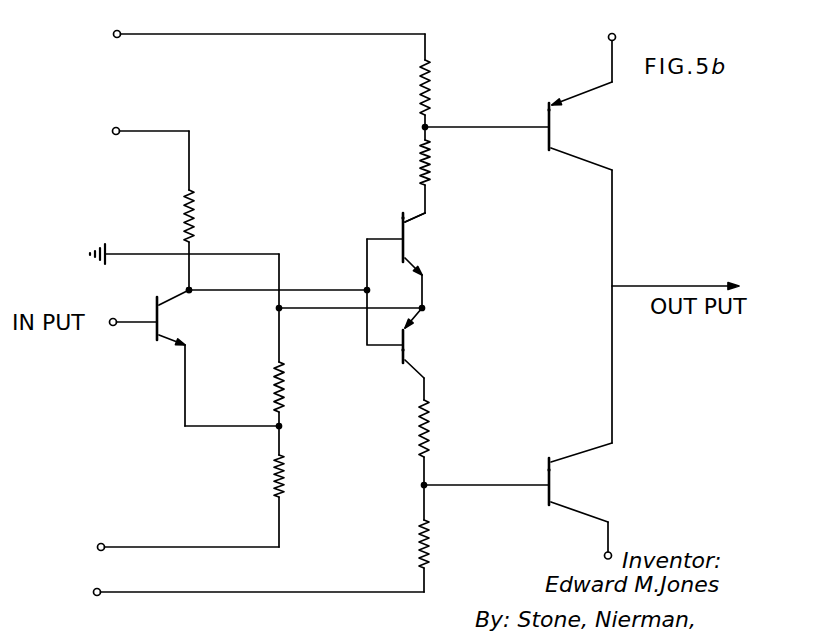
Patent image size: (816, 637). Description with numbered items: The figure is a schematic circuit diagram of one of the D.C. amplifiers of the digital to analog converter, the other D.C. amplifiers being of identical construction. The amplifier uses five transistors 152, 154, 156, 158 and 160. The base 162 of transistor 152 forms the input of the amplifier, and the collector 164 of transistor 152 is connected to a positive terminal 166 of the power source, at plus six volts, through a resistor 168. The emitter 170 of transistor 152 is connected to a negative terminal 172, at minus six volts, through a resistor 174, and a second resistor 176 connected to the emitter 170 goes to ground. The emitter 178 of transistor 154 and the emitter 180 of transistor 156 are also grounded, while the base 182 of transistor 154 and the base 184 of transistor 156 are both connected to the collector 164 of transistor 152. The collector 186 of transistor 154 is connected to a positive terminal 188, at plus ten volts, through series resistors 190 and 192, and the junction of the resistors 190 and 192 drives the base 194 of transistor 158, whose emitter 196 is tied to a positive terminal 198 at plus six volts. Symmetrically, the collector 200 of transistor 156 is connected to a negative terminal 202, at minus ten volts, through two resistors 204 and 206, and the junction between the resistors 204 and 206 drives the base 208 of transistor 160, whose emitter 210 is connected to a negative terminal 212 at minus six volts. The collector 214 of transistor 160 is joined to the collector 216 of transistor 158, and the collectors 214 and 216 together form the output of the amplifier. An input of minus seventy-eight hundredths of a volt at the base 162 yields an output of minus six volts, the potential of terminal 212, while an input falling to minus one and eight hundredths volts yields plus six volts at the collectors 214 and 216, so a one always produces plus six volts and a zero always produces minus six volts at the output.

The transistor 152 is at (182, 344).
The transistor 154 is at (407, 219).
The transistor 156 is at (407, 352).
The transistor 158 is at (573, 110).
The transistor 160 is at (583, 482).
The base 162 is at (155, 305).
The collector 164 is at (186, 290).
The positive terminal 166 is at (114, 135).
The resistor 168 is at (196, 193).
The emitter 170 is at (178, 350).
The negative terminal 172 is at (103, 544).
The resistor 174 is at (276, 478).
The second resistor 176 is at (276, 387).
The emitter 178 is at (412, 262).
The emitter 180 is at (410, 328).
The base 182 is at (399, 221).
The base 184 is at (400, 350).
The collector 186 is at (426, 213).
The positive terminal 188 is at (115, 38).
The resistor 190 is at (422, 155).
The resistor 192 is at (422, 82).
The base 194 is at (546, 110).
The emitter 196 is at (594, 96).
The positive terminal 198 is at (608, 37).
The collector 200 is at (418, 367).
The negative terminal 202 is at (97, 596).
The resistor 204 is at (427, 420).
The resistor 206 is at (427, 525).
The base 208 is at (548, 468).
The emitter 210 is at (585, 510).
The negative terminal 212 is at (611, 552).
The collector 214 is at (588, 428).
The collector 216 is at (578, 156).